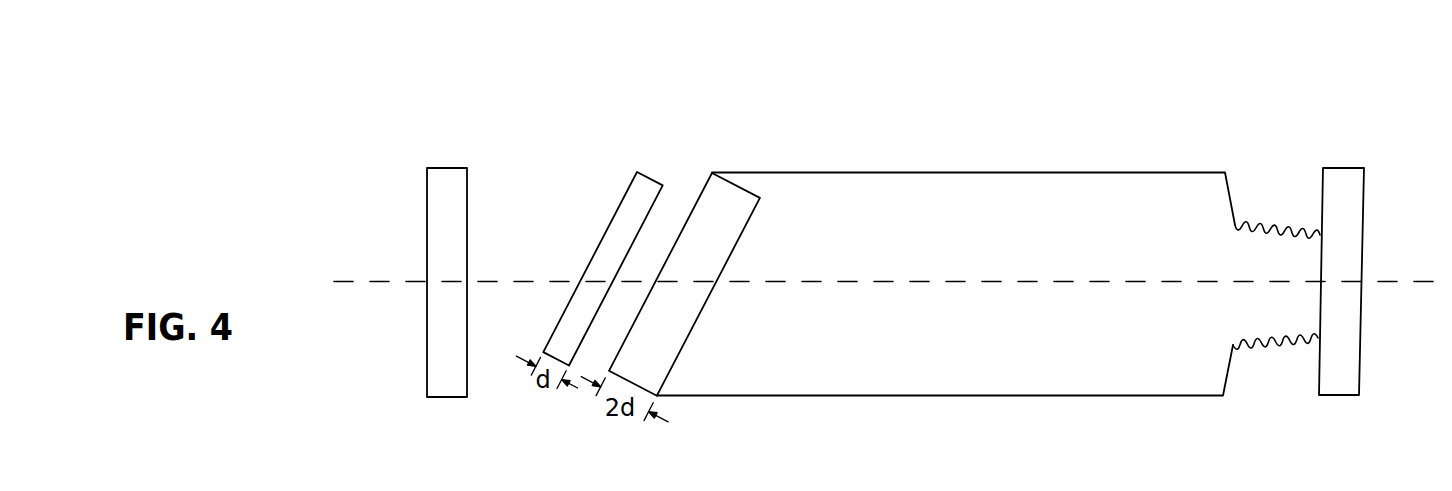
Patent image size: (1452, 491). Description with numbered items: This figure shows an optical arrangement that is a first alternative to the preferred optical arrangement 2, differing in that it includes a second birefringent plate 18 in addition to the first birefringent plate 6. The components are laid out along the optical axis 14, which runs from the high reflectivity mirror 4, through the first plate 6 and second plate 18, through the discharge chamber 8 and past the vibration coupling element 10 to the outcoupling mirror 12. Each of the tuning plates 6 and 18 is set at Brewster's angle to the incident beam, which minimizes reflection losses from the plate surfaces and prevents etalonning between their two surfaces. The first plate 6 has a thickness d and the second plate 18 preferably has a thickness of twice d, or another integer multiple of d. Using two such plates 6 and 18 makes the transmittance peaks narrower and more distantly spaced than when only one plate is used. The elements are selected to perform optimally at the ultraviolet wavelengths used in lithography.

The optical arrangement 2 is at (533, 74).
The high reflectivity mirror 4 is at (453, 168).
The birefringent plate 6 is at (622, 200).
The second birefringent plate 18 is at (700, 195).
The discharge chamber 8 is at (1033, 172).
The vibration coupling element 10 is at (1265, 222).
The outcoupling mirror 12 is at (1345, 167).
The optical axis 14 is at (380, 280).